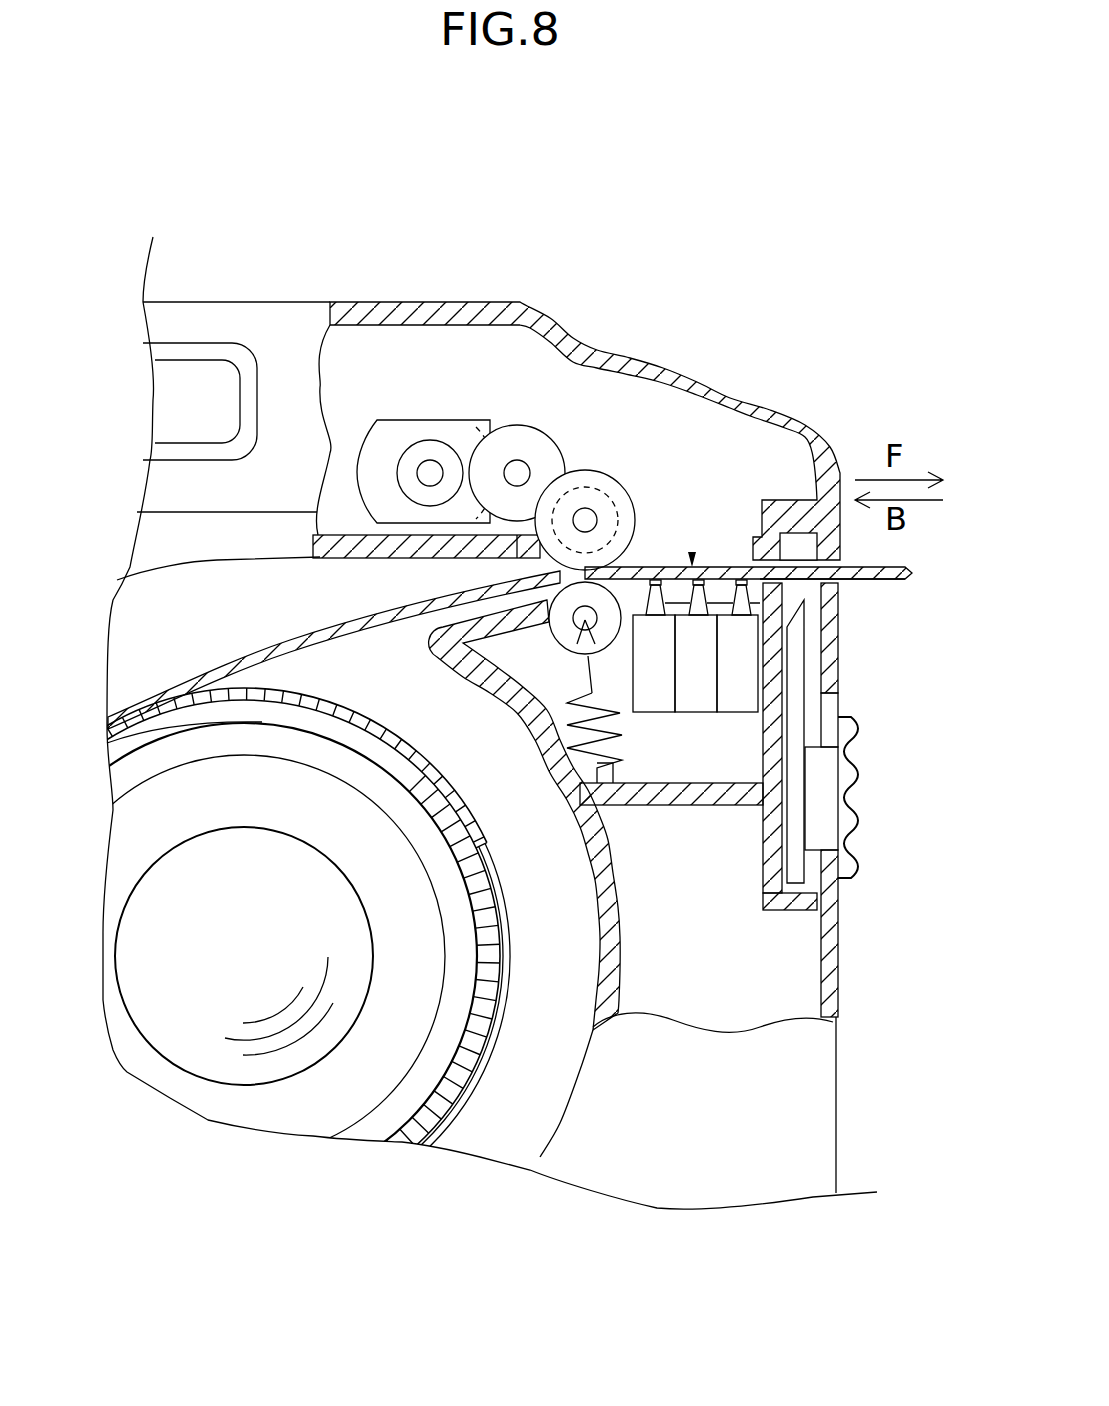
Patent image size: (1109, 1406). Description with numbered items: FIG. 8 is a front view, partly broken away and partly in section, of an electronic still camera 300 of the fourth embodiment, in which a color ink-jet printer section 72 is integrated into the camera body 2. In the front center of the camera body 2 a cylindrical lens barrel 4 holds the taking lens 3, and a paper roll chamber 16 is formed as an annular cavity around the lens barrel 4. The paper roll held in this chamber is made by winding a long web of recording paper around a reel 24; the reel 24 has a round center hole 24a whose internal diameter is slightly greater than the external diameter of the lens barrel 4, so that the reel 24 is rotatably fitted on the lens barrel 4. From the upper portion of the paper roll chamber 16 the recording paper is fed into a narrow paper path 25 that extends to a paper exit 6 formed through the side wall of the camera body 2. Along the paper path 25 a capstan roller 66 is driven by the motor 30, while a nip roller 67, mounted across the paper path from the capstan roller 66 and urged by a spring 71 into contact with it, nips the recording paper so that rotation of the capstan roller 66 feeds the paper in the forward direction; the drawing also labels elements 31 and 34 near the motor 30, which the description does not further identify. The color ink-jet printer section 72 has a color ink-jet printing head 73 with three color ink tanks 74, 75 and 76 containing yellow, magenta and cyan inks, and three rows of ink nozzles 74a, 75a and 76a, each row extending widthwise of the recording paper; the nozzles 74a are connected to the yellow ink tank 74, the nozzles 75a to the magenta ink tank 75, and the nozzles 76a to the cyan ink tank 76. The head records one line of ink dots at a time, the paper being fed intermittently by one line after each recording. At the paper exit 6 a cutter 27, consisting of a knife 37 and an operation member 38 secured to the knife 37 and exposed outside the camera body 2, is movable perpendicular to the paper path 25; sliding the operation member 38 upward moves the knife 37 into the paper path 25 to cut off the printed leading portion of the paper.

The electronic still camera 300 is at (275, 268).
The camera body 2 is at (407, 302).
The motor 30 is at (528, 450).
The discharge roller 31 is at (585, 487).
The roller core 34 is at (618, 480).
The capstan roller 66 is at (612, 605).
The nip roller 67 is at (692, 552).
The color ink-jet printer section 72 is at (400, 430).
The color ink-jet printing head 73 is at (735, 555).
The ink nozzles 74a is at (655, 583).
The ink nozzles 75a is at (698, 583).
The ink nozzles 76a is at (741, 583).
The yellow ink tank 74 is at (655, 700).
The magenta ink tank 75 is at (697, 700).
The cyan ink tank 76 is at (743, 707).
The spring 71 is at (610, 770).
The paper path 25 is at (468, 572).
The paper exit 6 is at (900, 565).
The round center hole 24a is at (470, 850).
The reel 24 is at (450, 1082).
The taking lens 3 is at (187, 987).
The lens barrel 4 is at (340, 1094).
The paper roll chamber 16 is at (550, 1067).
The knife 37 is at (804, 623).
The operation member 38 is at (845, 787).
The cutter 27 is at (940, 975).